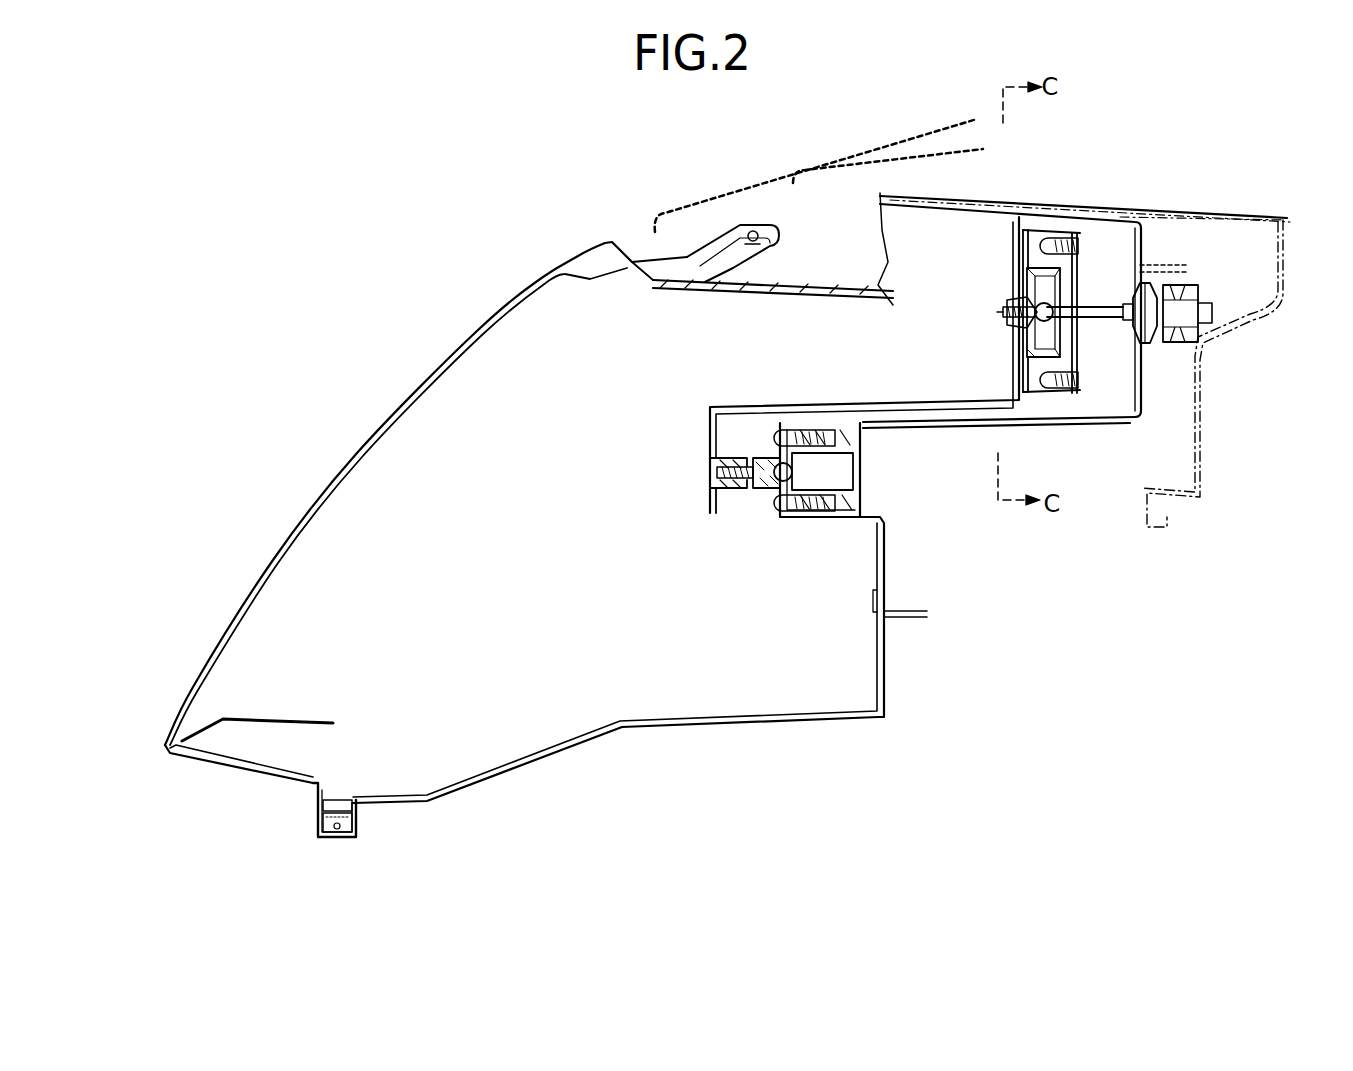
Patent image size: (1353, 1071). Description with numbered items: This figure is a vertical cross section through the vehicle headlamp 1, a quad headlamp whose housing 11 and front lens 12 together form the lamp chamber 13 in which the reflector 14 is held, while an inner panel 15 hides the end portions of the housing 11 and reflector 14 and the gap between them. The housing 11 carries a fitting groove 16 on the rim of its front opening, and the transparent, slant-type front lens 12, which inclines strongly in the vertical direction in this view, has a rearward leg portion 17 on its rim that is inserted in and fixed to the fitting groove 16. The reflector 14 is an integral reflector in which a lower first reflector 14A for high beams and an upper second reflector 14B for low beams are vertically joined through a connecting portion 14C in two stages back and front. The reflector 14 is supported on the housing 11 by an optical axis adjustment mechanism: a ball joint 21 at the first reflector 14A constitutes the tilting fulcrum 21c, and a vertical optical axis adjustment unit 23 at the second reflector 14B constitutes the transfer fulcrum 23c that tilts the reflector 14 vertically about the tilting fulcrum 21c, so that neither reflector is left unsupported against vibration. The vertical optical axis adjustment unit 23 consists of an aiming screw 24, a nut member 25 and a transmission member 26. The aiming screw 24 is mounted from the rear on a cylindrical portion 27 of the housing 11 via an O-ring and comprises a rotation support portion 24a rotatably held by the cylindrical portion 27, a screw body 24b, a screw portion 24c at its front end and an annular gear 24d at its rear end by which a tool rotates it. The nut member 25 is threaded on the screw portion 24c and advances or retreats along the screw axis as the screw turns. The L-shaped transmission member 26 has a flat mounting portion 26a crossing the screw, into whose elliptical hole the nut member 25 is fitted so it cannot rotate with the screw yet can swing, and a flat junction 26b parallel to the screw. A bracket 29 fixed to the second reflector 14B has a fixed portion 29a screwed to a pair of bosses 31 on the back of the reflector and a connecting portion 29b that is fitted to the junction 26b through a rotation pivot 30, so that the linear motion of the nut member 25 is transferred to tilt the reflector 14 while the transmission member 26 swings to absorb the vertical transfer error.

The vehicle headlamp 1 is at (388, 316).
The housing 11 is at (873, 720).
The front lens 12 is at (467, 337).
The lamp chamber 13 is at (451, 468).
The reflector 14 is at (817, 387).
The first reflector 14A is at (710, 500).
The second reflector 14B is at (1013, 383).
The connecting portion 14C is at (830, 405).
The inner panel 15 is at (297, 717).
The fitting groove 16 is at (742, 230).
The leg portion 17 is at (702, 247).
The ball joint 21 is at (767, 507).
The tilting fulcrum 21c is at (770, 490).
The vertical optical axis adjustment unit 23 is at (1027, 284).
The transfer fulcrum 23c is at (1036, 310).
The aiming screw 24 is at (1091, 320).
The rotation support portion 24a is at (1152, 320).
The screw body 24b is at (1103, 318).
The screw portion 24c is at (997, 312).
The annular gear 24d is at (1205, 353).
The nut member 25 is at (1010, 297).
The transmission member 26 is at (1018, 261).
The mounting portion 26a is at (1013, 262).
The junction 26b is at (1017, 278).
The cylindrical portion 27 is at (1150, 282).
The bracket 29 is at (1116, 421).
The fixed portion 29a is at (1083, 365).
The connecting portion 29b is at (1065, 338).
The rotation pivot 30 is at (1028, 338).
The bosses 31 is at (1045, 238).